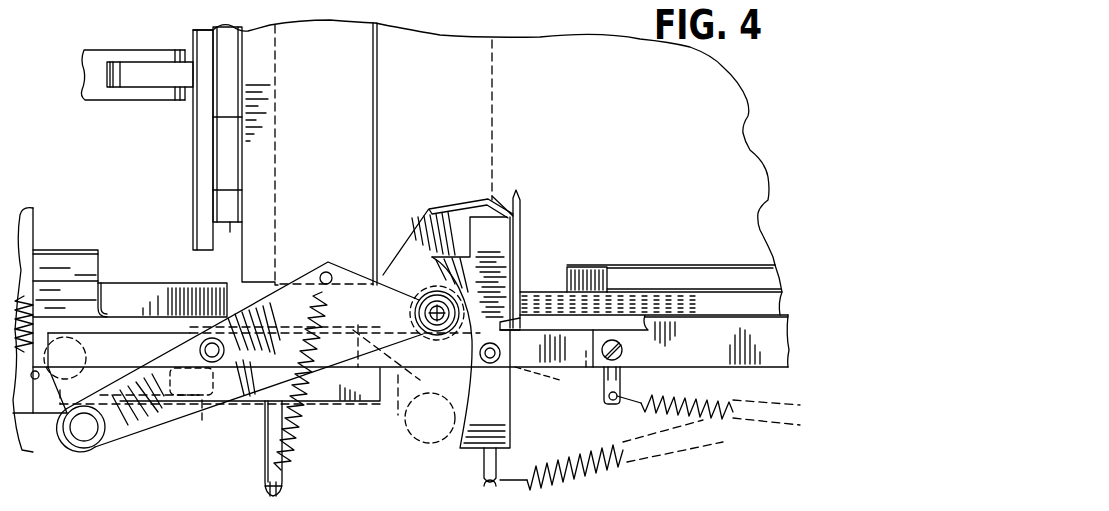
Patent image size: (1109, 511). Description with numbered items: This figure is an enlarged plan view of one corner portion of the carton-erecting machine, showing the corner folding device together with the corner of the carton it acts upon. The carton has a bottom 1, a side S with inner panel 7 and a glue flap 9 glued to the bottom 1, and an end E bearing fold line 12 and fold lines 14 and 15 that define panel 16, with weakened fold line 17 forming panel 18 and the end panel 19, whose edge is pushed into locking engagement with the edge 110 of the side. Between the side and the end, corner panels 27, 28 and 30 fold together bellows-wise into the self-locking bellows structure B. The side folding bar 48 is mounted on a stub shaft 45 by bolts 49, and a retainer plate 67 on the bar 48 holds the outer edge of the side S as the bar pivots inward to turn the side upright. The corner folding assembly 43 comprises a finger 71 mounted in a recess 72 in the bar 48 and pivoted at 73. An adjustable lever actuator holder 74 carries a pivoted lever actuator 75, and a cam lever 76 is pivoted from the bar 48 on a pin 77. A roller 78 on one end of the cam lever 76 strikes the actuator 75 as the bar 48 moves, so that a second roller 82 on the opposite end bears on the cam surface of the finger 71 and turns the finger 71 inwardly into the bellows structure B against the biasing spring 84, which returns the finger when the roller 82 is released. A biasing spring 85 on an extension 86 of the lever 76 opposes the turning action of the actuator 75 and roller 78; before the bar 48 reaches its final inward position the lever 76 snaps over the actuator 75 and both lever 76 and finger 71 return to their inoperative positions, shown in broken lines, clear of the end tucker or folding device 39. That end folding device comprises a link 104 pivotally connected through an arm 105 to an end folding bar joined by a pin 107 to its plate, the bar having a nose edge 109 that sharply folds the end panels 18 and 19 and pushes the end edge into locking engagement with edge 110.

The bottom 1 is at (671, 193).
The panel 7 is at (718, 304).
The glue flap 9 is at (690, 276).
The fold line 12 is at (496, 114).
The fold line 14 is at (406, 284).
The fold line 15 is at (378, 78).
The panel 16 is at (448, 118).
The weakened fold line 17 is at (278, 129).
The panel 18 is at (332, 218).
The end panel 19 is at (268, 170).
The panel 27 is at (520, 264).
The panel 28 is at (497, 206).
The panel 30 is at (450, 211).
The end tucker or folding device 39 is at (184, 137).
The corner folding assembly 43 is at (384, 405).
The stub shaft 45 is at (82, 258).
The side folding bar 48 is at (548, 365).
The bolts 49 is at (203, 430).
The retainer plate 67 is at (697, 355).
The finger 71 is at (500, 432).
The recess 72 is at (594, 358).
The pivot 73 is at (490, 362).
The lever actuator holder 74 is at (27, 247).
The lever actuator 75 is at (45, 432).
The cam lever 76 is at (170, 425).
The pin 77 is at (211, 358).
The roller 78 is at (67, 338).
The roller 82 is at (440, 336).
The biasing spring 84 is at (727, 420).
The biasing spring 85 is at (29, 310).
The extension 86 is at (266, 462).
The link 104 is at (97, 90).
The arm 105 is at (160, 74).
The pin 107 is at (231, 226).
The nose edge 109 is at (220, 174).
The edge 110 is at (561, 270).
The bellows structure B is at (524, 226).
The end E is at (236, 255).
The side S is at (600, 290).